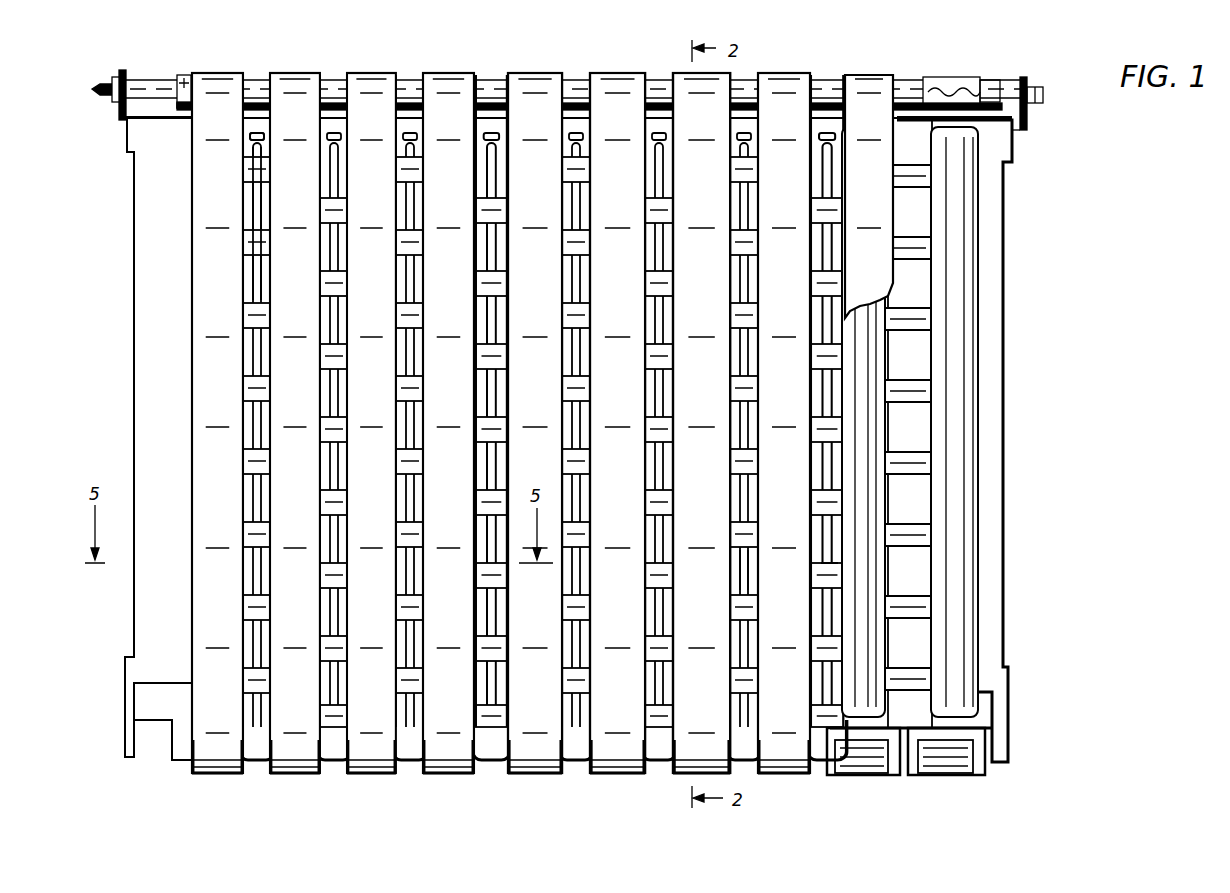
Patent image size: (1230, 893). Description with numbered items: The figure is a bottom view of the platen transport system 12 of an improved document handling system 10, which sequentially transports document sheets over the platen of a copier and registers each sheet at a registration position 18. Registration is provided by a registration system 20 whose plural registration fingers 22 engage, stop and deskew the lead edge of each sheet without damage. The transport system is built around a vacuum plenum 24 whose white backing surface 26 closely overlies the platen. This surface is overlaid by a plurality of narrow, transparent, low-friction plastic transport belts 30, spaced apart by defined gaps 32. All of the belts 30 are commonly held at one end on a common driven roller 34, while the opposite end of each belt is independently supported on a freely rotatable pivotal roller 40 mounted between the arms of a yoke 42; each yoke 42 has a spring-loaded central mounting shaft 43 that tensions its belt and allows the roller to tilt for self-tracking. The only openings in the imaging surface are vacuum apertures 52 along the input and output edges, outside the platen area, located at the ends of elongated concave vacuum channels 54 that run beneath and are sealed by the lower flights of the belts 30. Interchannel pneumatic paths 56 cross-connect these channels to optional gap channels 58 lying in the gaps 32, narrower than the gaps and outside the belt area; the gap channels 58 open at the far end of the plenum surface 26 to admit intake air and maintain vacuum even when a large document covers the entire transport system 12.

The document handling system 10 is at (1035, 396).
The platen transport system 12 is at (1025, 528).
The registration position 18 is at (660, 136).
The registration system 20 is at (577, 120).
The registration fingers 22 is at (830, 85).
The vacuum plenum 24 is at (258, 140).
The backing surface 26 is at (258, 202).
The transport belts 30 is at (447, 90).
The gaps 32 is at (332, 83).
The common driven roller 34 is at (189, 76).
The pivotal rollers 40 is at (868, 773).
The yoke 42 is at (827, 765).
The mounting shaft 43 is at (970, 725).
The vacuum apertures 52 is at (973, 138).
The vacuum channels 54 is at (950, 360).
The interchannel pneumatic paths 56 is at (912, 530).
The gap channels 58 is at (820, 592).